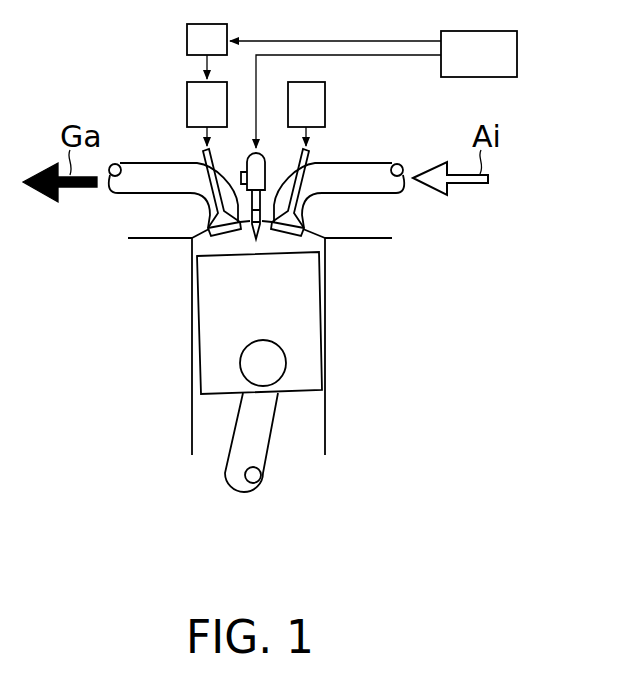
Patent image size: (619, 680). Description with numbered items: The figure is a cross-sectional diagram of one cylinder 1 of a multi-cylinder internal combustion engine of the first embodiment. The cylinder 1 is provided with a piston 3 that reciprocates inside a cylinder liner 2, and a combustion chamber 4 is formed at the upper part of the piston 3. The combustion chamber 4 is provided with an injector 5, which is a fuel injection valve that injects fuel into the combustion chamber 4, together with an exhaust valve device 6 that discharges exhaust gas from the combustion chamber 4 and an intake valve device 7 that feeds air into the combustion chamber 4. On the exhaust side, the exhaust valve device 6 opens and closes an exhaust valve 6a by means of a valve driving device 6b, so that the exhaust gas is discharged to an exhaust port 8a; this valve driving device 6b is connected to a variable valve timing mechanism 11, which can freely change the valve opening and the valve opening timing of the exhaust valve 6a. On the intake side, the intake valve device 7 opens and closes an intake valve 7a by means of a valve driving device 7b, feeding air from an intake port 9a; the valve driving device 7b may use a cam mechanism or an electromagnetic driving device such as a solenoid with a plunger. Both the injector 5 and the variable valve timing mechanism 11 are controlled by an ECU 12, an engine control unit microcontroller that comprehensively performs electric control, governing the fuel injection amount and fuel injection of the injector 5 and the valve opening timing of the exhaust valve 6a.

The cylinder 1 is at (98, 91).
The cylinder liner 2 is at (367, 244).
The piston 3 is at (313, 323).
The combustion chamber 4 is at (200, 237).
The injector 5 is at (263, 165).
The exhaust valve device 6 is at (172, 113).
The exhaust valve 6a is at (203, 160).
The valve driving device 6b is at (190, 101).
The intake valve device 7 is at (352, 128).
The intake valve 7a is at (313, 160).
The valve driving device 7b is at (327, 100).
The exhaust port 8a is at (128, 164).
The intake port 9a is at (383, 164).
The variable valve timing mechanism 11 is at (187, 43).
The ECU 12 is at (512, 57).